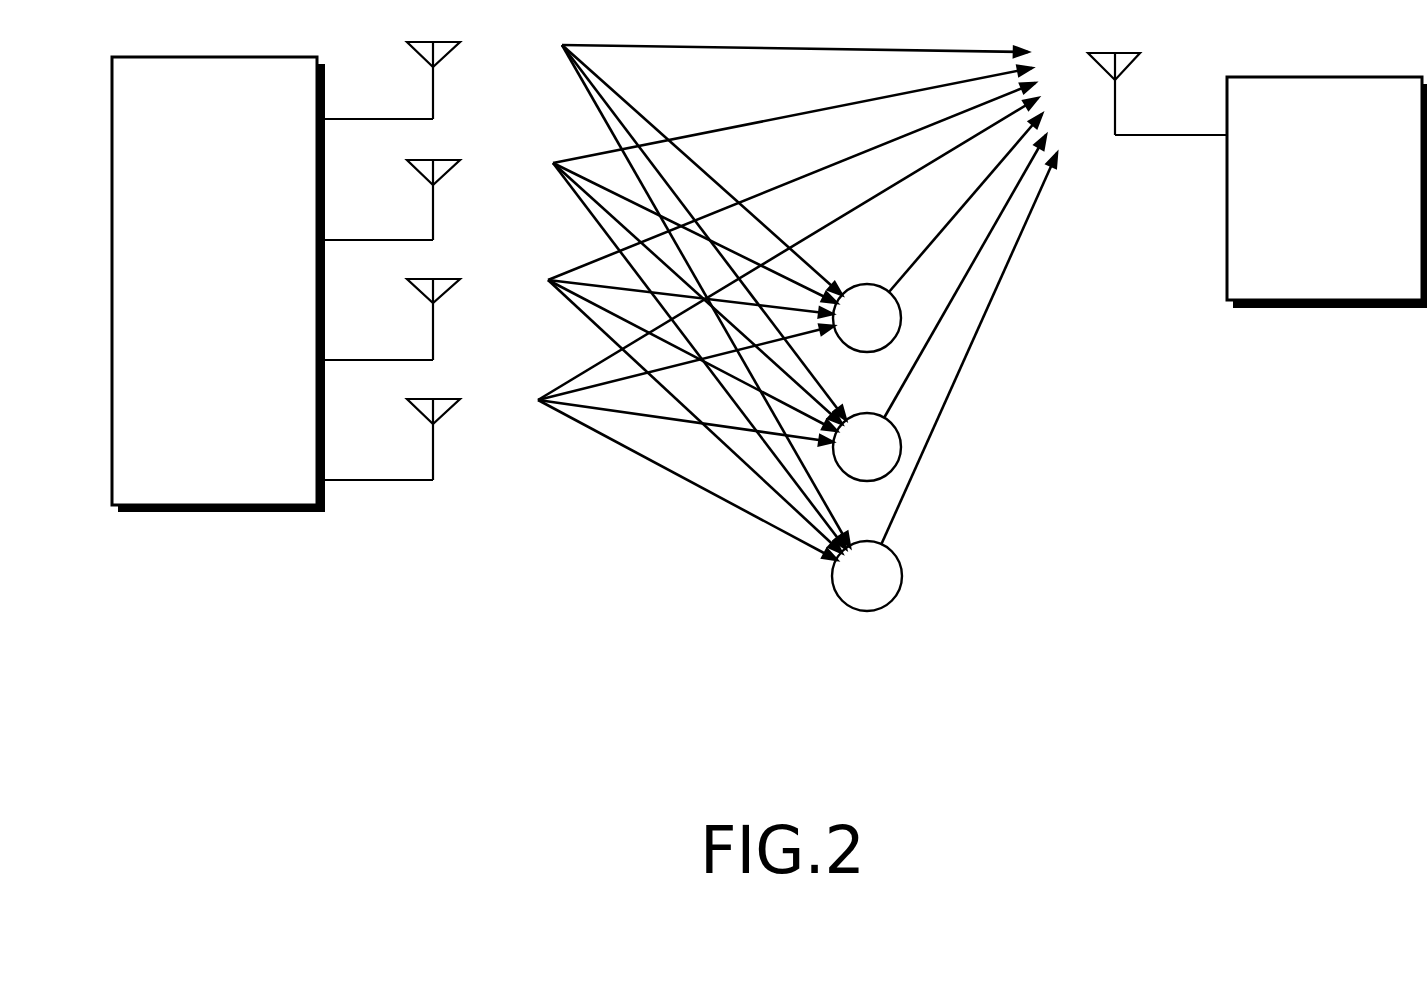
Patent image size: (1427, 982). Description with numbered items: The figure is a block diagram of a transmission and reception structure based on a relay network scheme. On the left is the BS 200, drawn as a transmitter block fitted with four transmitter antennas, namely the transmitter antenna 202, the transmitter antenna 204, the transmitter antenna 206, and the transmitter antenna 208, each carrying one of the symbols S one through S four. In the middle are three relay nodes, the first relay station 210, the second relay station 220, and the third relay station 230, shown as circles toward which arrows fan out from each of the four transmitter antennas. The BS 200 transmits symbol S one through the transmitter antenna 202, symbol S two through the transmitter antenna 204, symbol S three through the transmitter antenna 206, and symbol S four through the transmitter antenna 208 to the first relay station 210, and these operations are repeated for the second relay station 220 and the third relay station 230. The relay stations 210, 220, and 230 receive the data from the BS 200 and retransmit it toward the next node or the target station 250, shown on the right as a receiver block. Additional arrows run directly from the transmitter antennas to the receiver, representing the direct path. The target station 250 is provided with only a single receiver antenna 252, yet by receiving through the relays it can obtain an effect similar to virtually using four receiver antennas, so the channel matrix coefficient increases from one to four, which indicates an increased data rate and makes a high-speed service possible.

The BS 200 is at (228, 57).
The transmitter antenna 202 is at (438, 44).
The transmitter antenna 204 is at (438, 162).
The transmitter antenna 206 is at (438, 281).
The transmitter antenna 208 is at (438, 401).
The Relay Station-1 210 is at (902, 316).
The Relay Station-2 220 is at (902, 446).
The Relay Station-3 230 is at (902, 572).
The target station 250 is at (1317, 77).
The receiver antenna 252 is at (1114, 54).